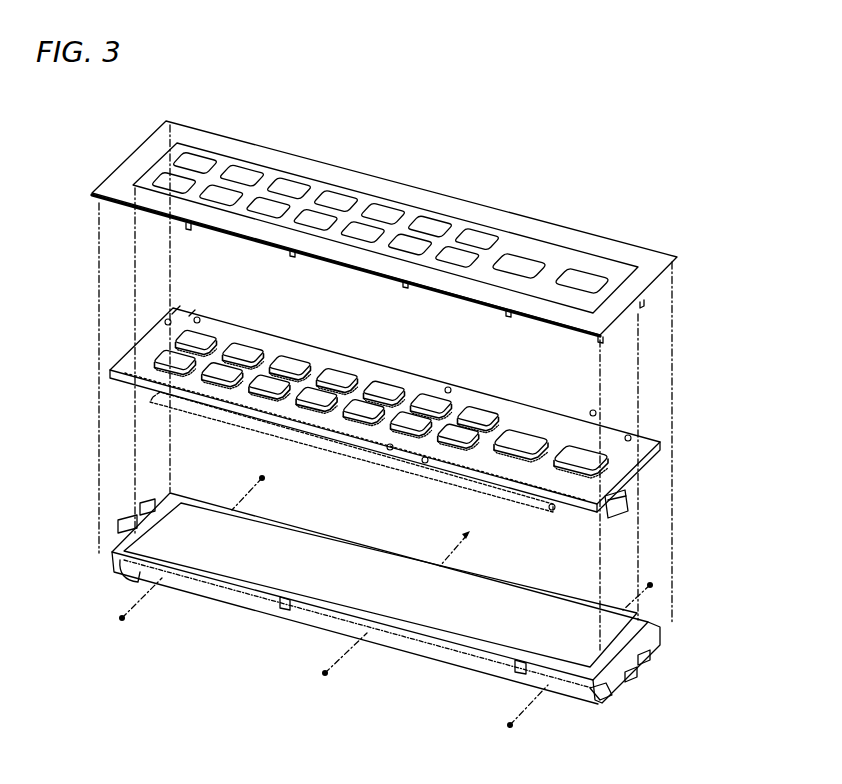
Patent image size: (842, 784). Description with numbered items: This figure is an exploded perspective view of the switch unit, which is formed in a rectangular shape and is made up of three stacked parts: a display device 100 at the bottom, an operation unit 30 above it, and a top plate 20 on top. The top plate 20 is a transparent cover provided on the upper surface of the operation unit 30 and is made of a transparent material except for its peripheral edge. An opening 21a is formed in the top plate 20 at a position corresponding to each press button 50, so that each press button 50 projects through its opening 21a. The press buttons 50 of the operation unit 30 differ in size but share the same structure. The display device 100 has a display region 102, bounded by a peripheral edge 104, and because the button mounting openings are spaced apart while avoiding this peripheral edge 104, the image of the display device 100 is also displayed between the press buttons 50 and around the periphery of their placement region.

The top plate 20 is at (557, 228).
The opening 21a is at (199, 151).
The operation unit 30 is at (557, 417).
The press button 50 is at (243, 346).
The display device 100 is at (558, 597).
The display region 102 is at (447, 592).
The peripheral edge 104 is at (533, 662).